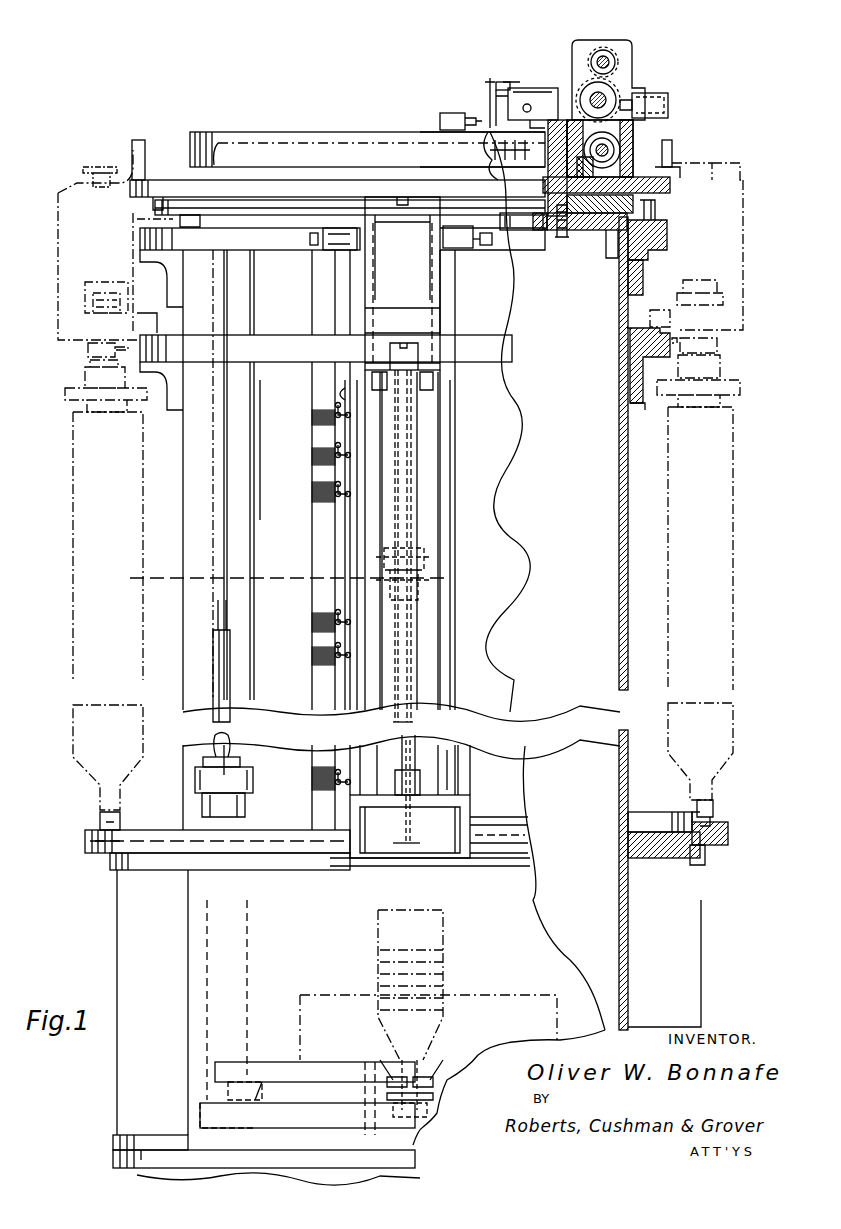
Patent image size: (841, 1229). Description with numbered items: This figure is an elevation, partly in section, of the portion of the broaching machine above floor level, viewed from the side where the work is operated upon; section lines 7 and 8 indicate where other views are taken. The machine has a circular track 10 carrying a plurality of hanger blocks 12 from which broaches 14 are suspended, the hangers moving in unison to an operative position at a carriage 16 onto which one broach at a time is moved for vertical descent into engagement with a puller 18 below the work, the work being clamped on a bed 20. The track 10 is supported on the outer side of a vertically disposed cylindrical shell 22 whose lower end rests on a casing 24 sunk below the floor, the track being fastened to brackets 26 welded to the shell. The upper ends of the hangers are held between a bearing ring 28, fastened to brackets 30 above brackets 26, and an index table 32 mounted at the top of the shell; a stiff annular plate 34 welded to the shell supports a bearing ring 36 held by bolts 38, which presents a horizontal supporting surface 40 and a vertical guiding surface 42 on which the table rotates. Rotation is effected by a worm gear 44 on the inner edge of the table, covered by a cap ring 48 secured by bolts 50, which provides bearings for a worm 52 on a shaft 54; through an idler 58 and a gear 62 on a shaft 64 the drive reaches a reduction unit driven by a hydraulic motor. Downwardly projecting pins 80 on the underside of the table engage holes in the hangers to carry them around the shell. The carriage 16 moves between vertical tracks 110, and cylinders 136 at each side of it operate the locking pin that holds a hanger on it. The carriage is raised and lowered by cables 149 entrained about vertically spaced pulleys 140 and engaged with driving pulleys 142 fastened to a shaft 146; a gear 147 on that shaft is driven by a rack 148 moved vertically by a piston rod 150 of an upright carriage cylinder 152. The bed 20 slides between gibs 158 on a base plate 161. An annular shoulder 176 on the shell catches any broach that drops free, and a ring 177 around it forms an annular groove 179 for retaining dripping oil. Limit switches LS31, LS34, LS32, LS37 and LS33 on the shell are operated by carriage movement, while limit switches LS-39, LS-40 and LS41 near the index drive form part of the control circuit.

The section line 7 is at (300, 236).
The section line 8 is at (291, 316).
The circular track 10 is at (628, 338).
The hanger block 12 is at (72, 193).
The broach 14 is at (722, 463).
The carriage 16 is at (408, 261).
The puller 18 is at (430, 1080).
The bed 20 is at (252, 1068).
The cylindrical shell 22 is at (183, 498).
The casing 24 is at (113, 1168).
The bracket 26 is at (628, 386).
The bearing ring 28 is at (668, 232).
The bracket 30 is at (655, 272).
The index table 32 is at (672, 180).
The annular plate 34 is at (592, 232).
The bearing ring 36 is at (562, 240).
The bolt 38 is at (540, 230).
The horizontal supporting surface 40 is at (603, 233).
The vertical guiding surface 42 is at (582, 232).
The worm gear 44 is at (556, 120).
The cap ring 48 is at (306, 140).
The bolt 50 is at (480, 158).
The worm 52 is at (616, 142).
The shaft 54 is at (640, 163).
The idler 58 is at (612, 84).
The gear 62 is at (590, 52).
The shaft 64 is at (605, 62).
The pin 80 is at (150, 203).
The track 110 is at (372, 485).
The cylinder 136 is at (328, 245).
The pulley 140 is at (420, 786).
The driving pulley 142 is at (420, 552).
The shaft 146 is at (277, 581).
The gear 147 is at (270, 577).
The rack 148 is at (215, 531).
The cable 149 is at (398, 682).
The piston rod 150 is at (213, 654).
The carriage cylinder 152 is at (242, 812).
The gib 158 is at (258, 1086).
The base plate 161 is at (306, 1137).
The annular shoulder 176 is at (712, 850).
The ring 177 is at (728, 826).
The annular groove 179 is at (705, 820).
The limit switch LS-39 is at (516, 88).
The limit switch LS-40 is at (450, 114).
The limit switch LS41 is at (670, 104).
The limit switch LS31 is at (308, 434).
The limit switch LS34 is at (308, 472).
The limit switch LS32 is at (307, 621).
The limit switch LS37 is at (307, 654).
The limit switch LS33 is at (308, 778).